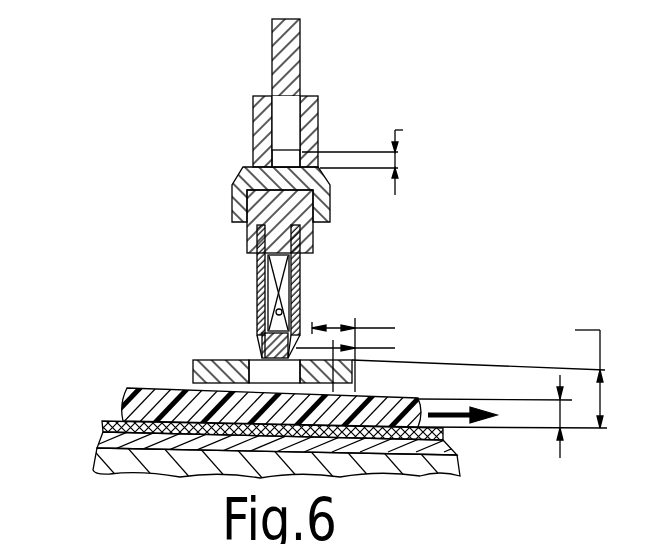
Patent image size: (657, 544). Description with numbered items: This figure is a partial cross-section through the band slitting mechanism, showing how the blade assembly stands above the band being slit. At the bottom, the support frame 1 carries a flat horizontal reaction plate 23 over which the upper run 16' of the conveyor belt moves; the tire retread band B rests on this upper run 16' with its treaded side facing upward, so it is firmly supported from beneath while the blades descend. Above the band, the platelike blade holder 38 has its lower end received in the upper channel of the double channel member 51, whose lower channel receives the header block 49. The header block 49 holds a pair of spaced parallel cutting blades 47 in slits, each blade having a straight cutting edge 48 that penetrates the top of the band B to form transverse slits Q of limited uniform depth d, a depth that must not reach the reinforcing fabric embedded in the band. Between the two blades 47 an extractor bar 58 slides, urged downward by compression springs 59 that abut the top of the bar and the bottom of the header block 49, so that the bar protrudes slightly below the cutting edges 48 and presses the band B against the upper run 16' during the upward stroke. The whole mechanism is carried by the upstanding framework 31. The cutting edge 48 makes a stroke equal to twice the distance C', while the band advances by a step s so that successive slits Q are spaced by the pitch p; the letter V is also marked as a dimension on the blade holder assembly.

The blade holder 38 is at (292, 51).
The header block 49 is at (307, 240).
The double channel member 51 is at (328, 193).
The cutting blades 47 is at (259, 267).
The compression springs 59 is at (290, 317).
The extractor bar 58 is at (298, 333).
The cutting edges 48 is at (260, 337).
The framework 31 is at (225, 367).
The tire retread band B is at (140, 398).
The upper run of the conveyor belt 16' is at (244, 419).
The reaction plate 23 is at (92, 440).
The support frame 1 is at (120, 457).
The transverse slits Q is at (402, 397).
The stroke distance V is at (359, 158).
The step s is at (359, 355).
The pitch p is at (352, 365).
The half stroke distance of the cutting edge C' is at (579, 373).
The slit depth d is at (512, 416).